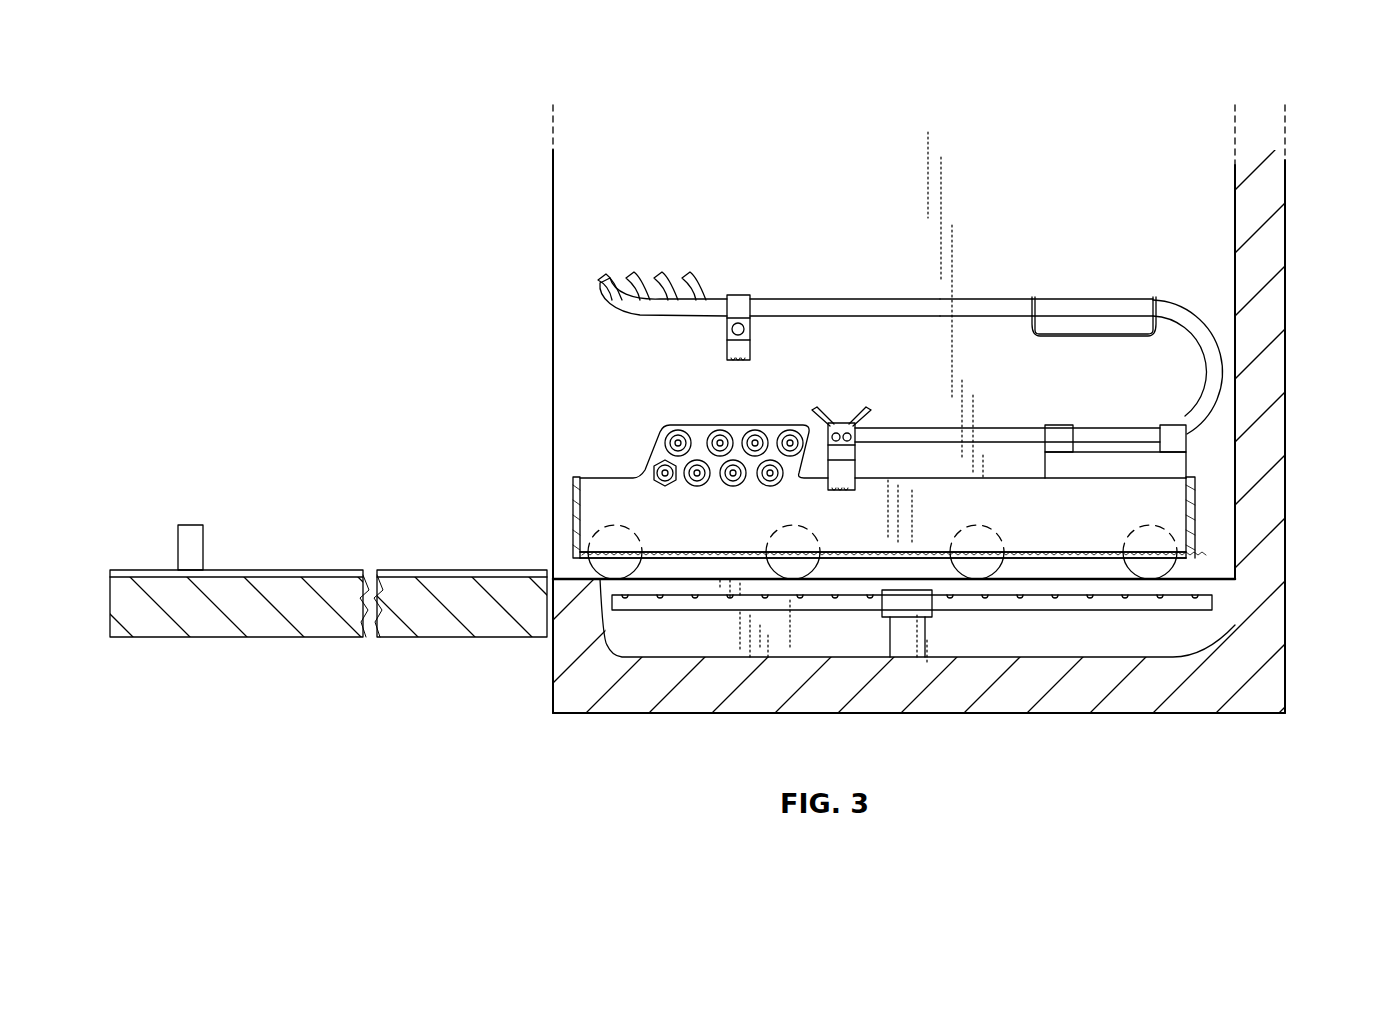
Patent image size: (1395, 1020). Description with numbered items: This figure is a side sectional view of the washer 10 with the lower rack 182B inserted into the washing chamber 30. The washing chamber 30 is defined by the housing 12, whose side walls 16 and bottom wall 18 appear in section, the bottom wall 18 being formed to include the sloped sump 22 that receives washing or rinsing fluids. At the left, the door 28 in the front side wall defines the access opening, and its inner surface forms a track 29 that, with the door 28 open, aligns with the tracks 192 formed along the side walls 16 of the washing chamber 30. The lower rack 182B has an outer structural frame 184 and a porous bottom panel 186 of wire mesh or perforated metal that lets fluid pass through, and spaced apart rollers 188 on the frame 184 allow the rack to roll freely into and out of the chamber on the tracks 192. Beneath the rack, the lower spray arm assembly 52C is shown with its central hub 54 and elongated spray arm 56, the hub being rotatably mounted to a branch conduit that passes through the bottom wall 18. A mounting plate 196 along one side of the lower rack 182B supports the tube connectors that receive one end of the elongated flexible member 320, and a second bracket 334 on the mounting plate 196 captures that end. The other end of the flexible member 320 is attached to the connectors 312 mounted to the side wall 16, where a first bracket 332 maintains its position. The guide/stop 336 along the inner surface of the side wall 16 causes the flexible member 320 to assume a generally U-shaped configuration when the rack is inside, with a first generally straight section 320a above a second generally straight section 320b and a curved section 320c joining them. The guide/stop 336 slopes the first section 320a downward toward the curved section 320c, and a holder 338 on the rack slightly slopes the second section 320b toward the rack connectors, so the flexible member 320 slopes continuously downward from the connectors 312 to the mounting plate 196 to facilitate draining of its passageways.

The washer 10 is at (500, 288).
The housing 12 is at (1112, 715).
The side walls 16 is at (580, 216).
The bottom wall 18 is at (1010, 693).
The sloped sump 22 is at (951, 668).
The door 28 is at (312, 650).
The track 29 is at (405, 577).
The washing chamber 30 is at (598, 185).
The lower spray arm assembly 52C is at (962, 625).
The central hub 54 is at (880, 603).
The spray arm 56 is at (790, 605).
The lower rack 182B is at (562, 470).
The outer structural frame 184 is at (575, 507).
The porous bottom panel 186 is at (1055, 556).
The rollers 188 is at (610, 568).
The tracks 192 is at (1018, 572).
The mounting plate 196 is at (737, 435).
The connectors 312 is at (633, 272).
The elongated flexible member 320 is at (848, 290).
The first section 320a is at (980, 302).
The second section 320b is at (1000, 428).
The curved section 320c is at (1222, 357).
The first bracket 332 is at (742, 295).
The second bracket 334 is at (842, 423).
The guide/stop 336 is at (1036, 298).
The holder 338 is at (1065, 428).